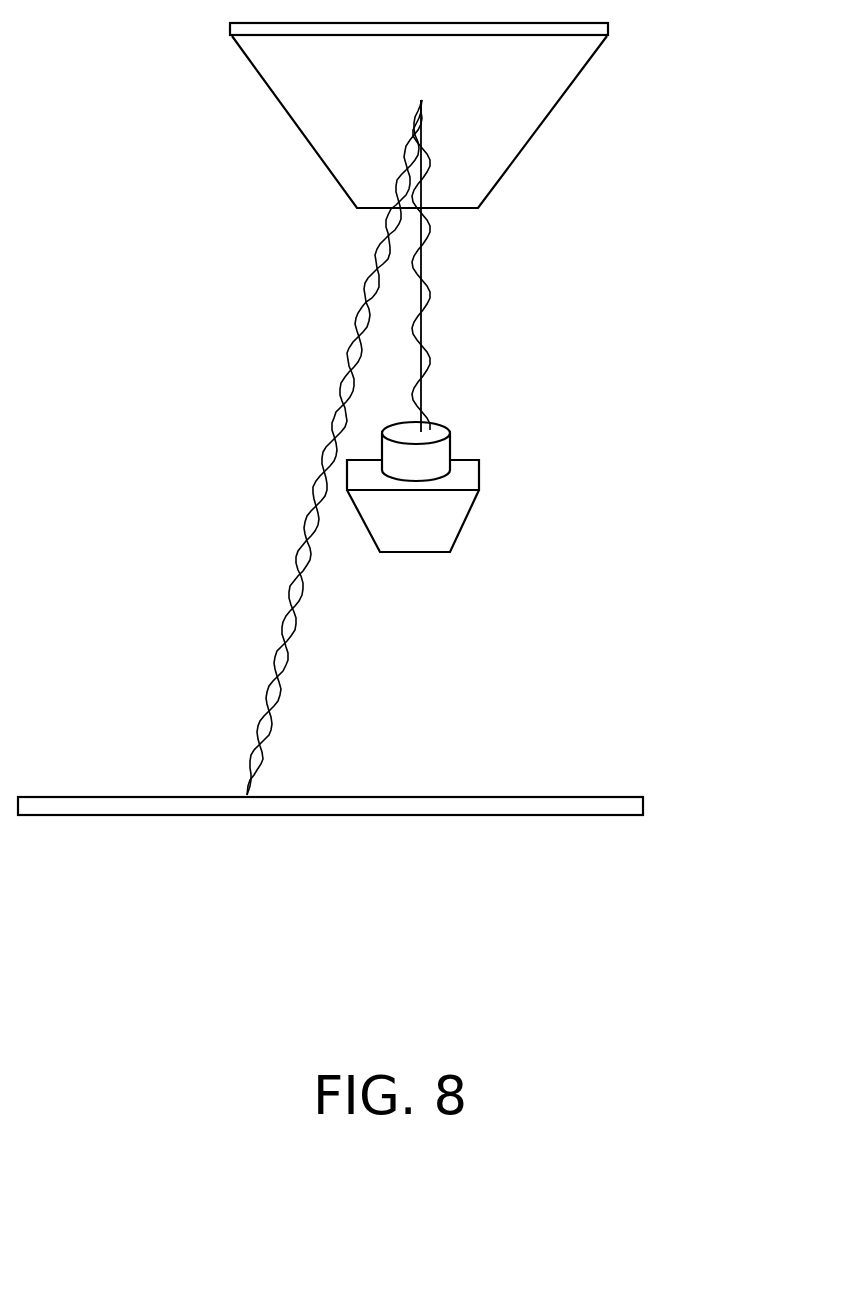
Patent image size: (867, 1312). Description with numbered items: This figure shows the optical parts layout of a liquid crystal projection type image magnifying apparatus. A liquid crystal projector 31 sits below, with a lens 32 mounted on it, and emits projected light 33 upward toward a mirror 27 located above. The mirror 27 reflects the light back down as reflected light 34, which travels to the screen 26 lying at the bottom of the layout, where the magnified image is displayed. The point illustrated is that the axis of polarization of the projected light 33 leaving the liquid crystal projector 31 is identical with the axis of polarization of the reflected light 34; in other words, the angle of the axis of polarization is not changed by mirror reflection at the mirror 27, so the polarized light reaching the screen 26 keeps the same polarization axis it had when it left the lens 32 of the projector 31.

The screen 26 is at (621, 809).
The mirror 27 is at (557, 72).
The liquid crystal projector 31 is at (452, 524).
The lens 32 is at (452, 441).
The projected light 33 is at (412, 268).
The reflected light 34 is at (303, 511).